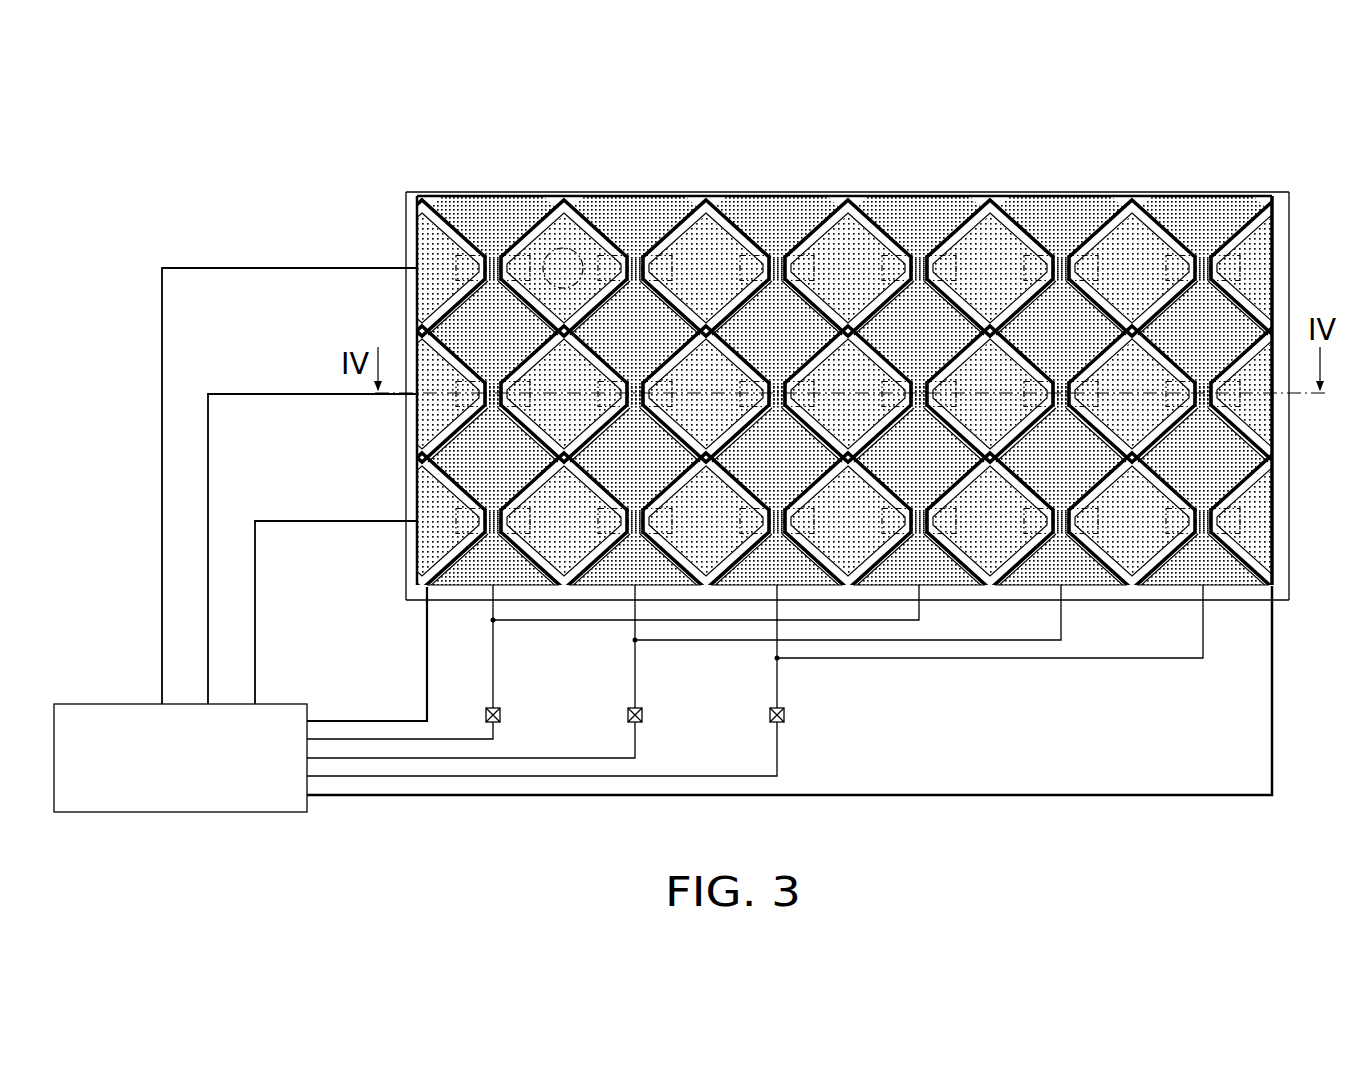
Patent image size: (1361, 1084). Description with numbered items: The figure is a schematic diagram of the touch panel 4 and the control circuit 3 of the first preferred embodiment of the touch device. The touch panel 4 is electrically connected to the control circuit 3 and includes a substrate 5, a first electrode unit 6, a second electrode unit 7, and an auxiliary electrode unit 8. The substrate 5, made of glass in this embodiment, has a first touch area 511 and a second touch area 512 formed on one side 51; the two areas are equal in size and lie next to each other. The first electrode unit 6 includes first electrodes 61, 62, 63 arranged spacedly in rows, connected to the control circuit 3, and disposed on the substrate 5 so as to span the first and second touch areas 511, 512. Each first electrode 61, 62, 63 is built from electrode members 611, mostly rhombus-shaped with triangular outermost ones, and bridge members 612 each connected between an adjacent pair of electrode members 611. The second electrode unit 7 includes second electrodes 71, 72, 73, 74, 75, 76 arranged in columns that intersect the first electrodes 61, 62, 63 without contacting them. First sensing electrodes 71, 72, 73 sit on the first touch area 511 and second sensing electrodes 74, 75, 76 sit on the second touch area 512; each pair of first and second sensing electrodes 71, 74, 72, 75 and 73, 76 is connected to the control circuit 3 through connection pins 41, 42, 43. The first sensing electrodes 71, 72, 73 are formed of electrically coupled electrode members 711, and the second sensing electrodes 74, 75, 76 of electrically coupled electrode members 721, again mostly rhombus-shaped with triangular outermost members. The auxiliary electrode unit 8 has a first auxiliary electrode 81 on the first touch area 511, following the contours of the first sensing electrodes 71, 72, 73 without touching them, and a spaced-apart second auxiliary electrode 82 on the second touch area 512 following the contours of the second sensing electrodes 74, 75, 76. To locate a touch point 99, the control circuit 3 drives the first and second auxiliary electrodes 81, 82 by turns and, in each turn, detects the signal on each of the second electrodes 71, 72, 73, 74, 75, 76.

The control circuit 3 is at (205, 815).
The touch panel 4 is at (483, 182).
The substrate 5 is at (728, 186).
The side of the substrate 51 is at (845, 196).
The first touch area 511 is at (409, 192).
The second touch area 512 is at (1285, 192).
The first electrode unit 6 is at (415, 241).
The first electrode 61 is at (416, 292).
The first electrode 62 is at (416, 420).
The first electrode 63 is at (416, 547).
The electrode member 611 is at (688, 238).
The bridge member 612 is at (628, 257).
The second electrode unit 7 is at (1232, 590).
The first sensing electrode 71 is at (517, 590).
The first sensing electrode 72 is at (660, 590).
The first sensing electrode 73 is at (801, 590).
The second sensing electrode 74 is at (944, 590).
The second sensing electrode 75 is at (1086, 590).
The second sensing electrode 76 is at (1170, 590).
The electrode member 711 is at (612, 470).
The electrode member 721 is at (1075, 445).
The auxiliary electrode unit 8 is at (1118, 190).
The first auxiliary electrode 81 is at (698, 200).
The second auxiliary electrode 82 is at (998, 200).
The touch point 99 is at (563, 262).
The connection pin 41 is at (502, 717).
The connection pin 42 is at (644, 717).
The connection pin 43 is at (786, 717).